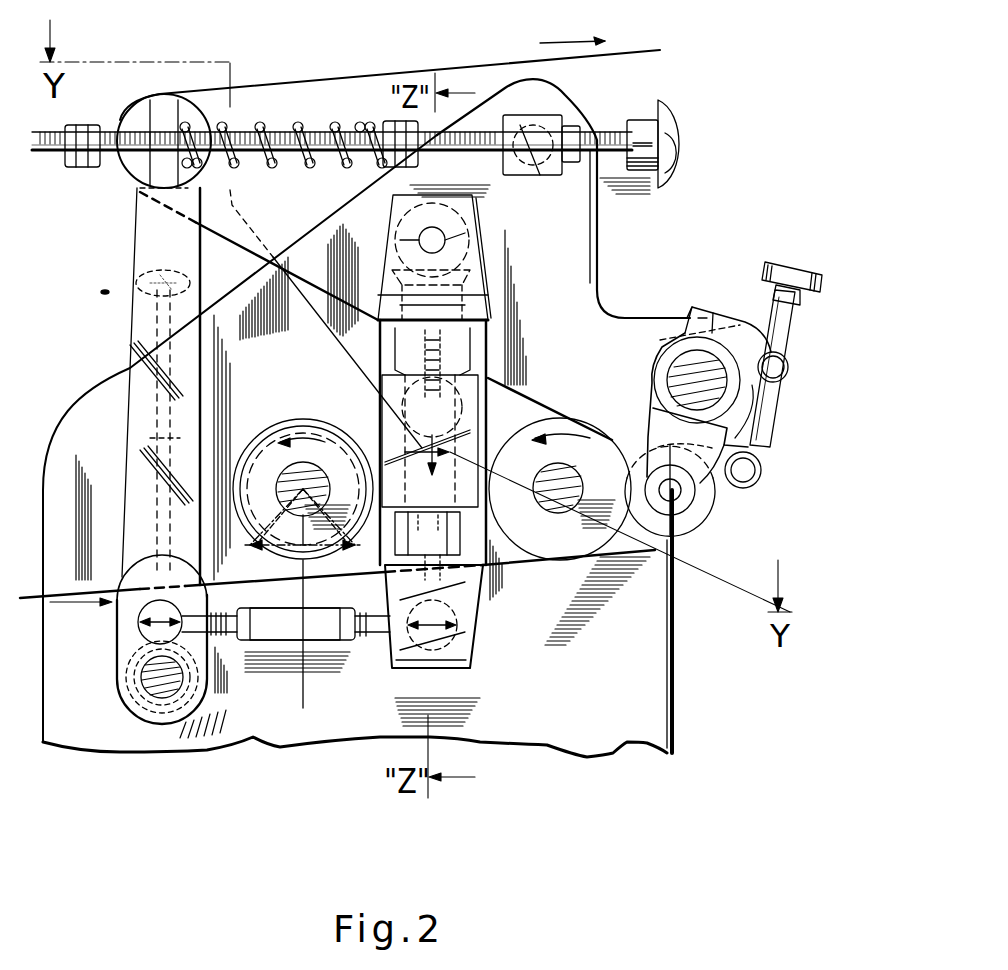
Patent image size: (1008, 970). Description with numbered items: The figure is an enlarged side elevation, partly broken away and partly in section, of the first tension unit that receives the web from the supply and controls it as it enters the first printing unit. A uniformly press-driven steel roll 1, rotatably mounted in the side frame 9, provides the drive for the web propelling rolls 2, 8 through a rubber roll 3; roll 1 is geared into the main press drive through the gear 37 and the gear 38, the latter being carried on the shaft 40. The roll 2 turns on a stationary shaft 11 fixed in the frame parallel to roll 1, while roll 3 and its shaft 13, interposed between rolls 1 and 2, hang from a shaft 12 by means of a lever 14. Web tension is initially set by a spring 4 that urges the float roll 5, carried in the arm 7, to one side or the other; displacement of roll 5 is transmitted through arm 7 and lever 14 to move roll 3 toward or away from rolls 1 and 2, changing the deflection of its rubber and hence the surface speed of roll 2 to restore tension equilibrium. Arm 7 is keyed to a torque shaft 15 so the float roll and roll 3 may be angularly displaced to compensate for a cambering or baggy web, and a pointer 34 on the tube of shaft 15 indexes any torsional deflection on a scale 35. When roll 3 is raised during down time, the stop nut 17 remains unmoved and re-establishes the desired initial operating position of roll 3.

The steel roll 1 is at (285, 420).
The web propelling roll 2 is at (575, 440).
The rubber roll 3 is at (362, 445).
The spring 4 is at (300, 128).
The float roll 5 is at (135, 110).
The float roll arm 7 is at (137, 246).
The web propelling roll 8 is at (695, 510).
The side frame 9 is at (648, 690).
The stationary shaft 11 is at (545, 510).
The shaft 12 is at (465, 233).
The shaft 13 is at (433, 494).
The lever 14 is at (475, 305).
The torque shaft 15 is at (140, 677).
The stop nut 17 is at (417, 546).
The pointer 34 is at (150, 438).
The scale 35 is at (132, 294).
The gear 37 is at (316, 430).
The gear 38 is at (285, 548).
The shaft 40 is at (303, 680).